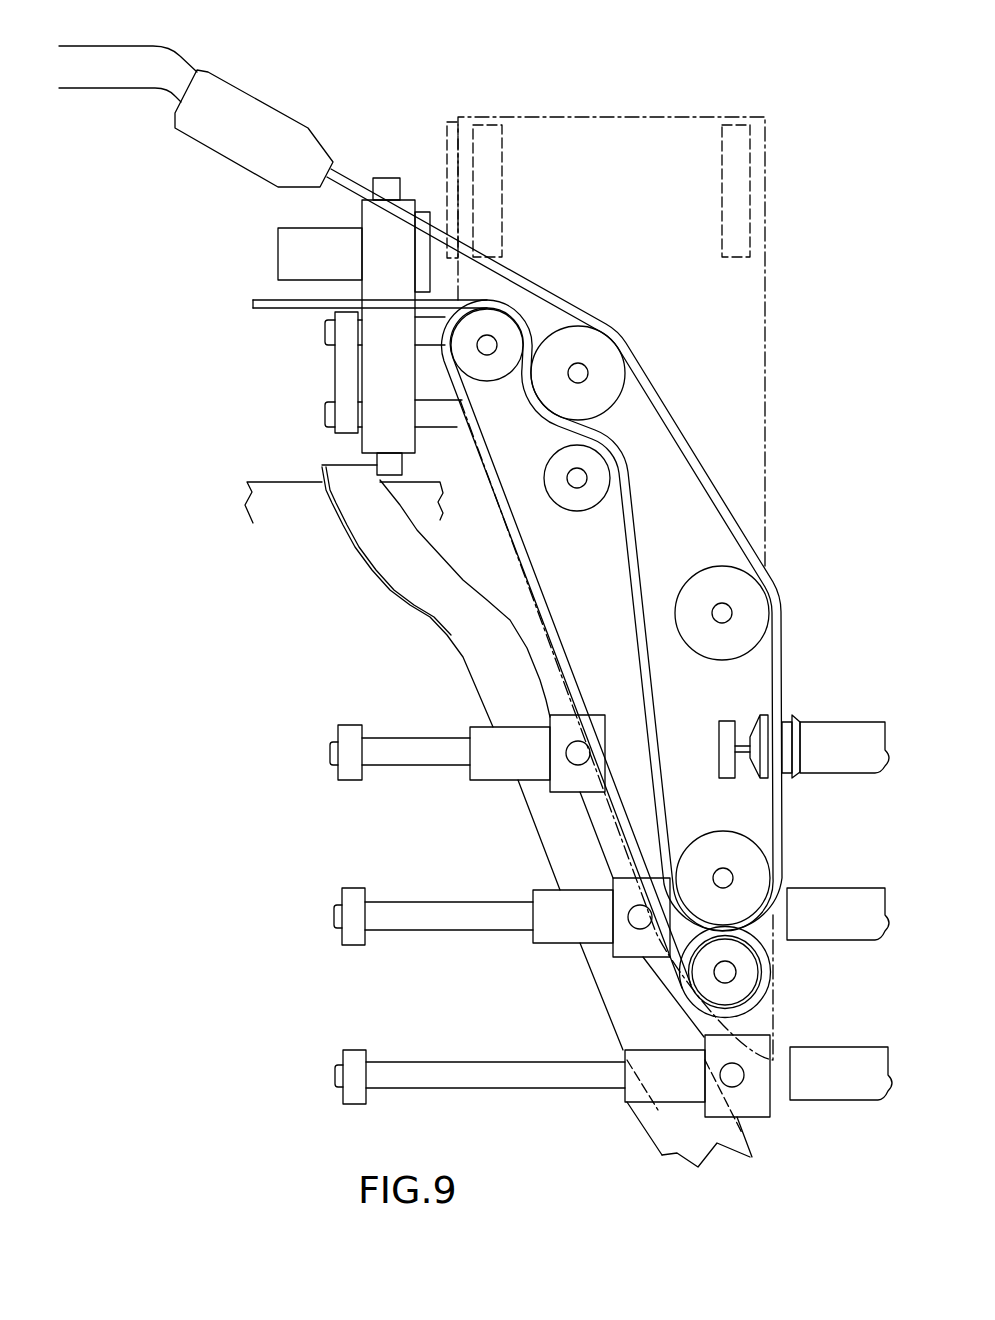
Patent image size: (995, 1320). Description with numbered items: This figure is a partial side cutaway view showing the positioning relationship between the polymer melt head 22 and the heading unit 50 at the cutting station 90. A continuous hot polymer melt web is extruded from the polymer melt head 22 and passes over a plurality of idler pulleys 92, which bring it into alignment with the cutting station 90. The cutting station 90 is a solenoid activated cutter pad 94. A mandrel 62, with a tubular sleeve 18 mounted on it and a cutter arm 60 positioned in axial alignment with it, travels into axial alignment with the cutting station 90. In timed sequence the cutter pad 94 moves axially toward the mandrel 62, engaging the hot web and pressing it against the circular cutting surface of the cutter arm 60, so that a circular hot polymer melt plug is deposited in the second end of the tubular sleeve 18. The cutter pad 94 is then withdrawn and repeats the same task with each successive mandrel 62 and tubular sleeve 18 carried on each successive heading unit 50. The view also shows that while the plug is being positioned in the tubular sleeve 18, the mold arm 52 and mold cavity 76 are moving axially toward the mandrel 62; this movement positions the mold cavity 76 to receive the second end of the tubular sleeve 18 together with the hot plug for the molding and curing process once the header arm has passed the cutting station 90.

The polymer melt head 22 is at (253, 103).
The idler pulleys 92 is at (610, 396).
The cutting station 90 is at (718, 727).
The cutter pad 94 is at (760, 776).
The cutter arm 60 is at (795, 779).
The mandrel 62 is at (846, 728).
The tubular sleeve 18 is at (858, 773).
The heading unit 50 is at (320, 750).
The mold arm 52 is at (487, 770).
The mold cavity 76 is at (560, 787).